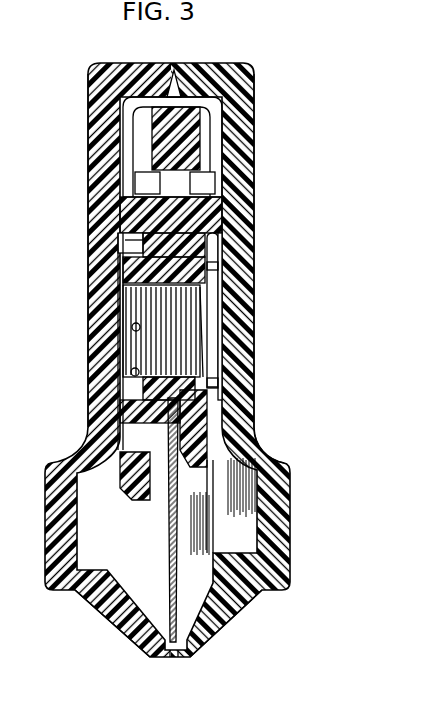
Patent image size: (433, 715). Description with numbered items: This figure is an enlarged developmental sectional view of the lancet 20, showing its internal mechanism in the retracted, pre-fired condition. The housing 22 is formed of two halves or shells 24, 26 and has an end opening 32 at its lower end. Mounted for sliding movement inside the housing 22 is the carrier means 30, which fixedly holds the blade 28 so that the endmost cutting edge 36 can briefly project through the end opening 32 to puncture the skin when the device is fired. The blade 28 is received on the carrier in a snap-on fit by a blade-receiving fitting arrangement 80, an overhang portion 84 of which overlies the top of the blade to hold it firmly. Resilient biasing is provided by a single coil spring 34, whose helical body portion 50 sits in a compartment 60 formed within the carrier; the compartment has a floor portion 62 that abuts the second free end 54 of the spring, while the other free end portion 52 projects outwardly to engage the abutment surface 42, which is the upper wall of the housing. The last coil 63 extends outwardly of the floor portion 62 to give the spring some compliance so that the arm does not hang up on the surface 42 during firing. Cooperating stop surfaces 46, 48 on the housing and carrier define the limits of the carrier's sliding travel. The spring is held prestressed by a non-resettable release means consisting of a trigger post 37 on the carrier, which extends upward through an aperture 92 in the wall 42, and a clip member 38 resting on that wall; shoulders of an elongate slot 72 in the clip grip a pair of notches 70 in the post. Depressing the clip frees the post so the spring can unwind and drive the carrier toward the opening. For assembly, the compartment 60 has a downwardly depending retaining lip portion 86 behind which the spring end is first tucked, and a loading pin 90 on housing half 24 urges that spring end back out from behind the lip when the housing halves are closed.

The lancet 20 is at (85, 233).
The housing 22 is at (245, 64).
The housing half 24 is at (90, 104).
The housing half 26 is at (254, 116).
The blade 28 is at (120, 425).
The carrier means 30 is at (255, 418).
The end opening 32 is at (176, 656).
The coil spring 34 is at (118, 333).
The endmost cutting edge 36 is at (168, 563).
The trigger post 37 is at (254, 82).
The clip member 38 is at (216, 186).
The abutment surface 42 is at (118, 238).
The stop surface 46 is at (228, 606).
The stop surface 48 is at (205, 483).
The helical body portion 50 is at (195, 330).
The free end portion 52 is at (222, 250).
The second free end 54 is at (123, 362).
The compartment 60 is at (123, 276).
The floor portion 62 is at (200, 345).
The last coil 63 is at (213, 380).
The notches 70 is at (123, 160).
The elongate slot 72 is at (222, 150).
The blade-receiving fitting arrangement 80 is at (123, 477).
The overhang portion 84 is at (125, 415).
The retaining lip portion 86 is at (222, 266).
The loading pin 90 is at (123, 262).
The aperture 92 is at (219, 230).